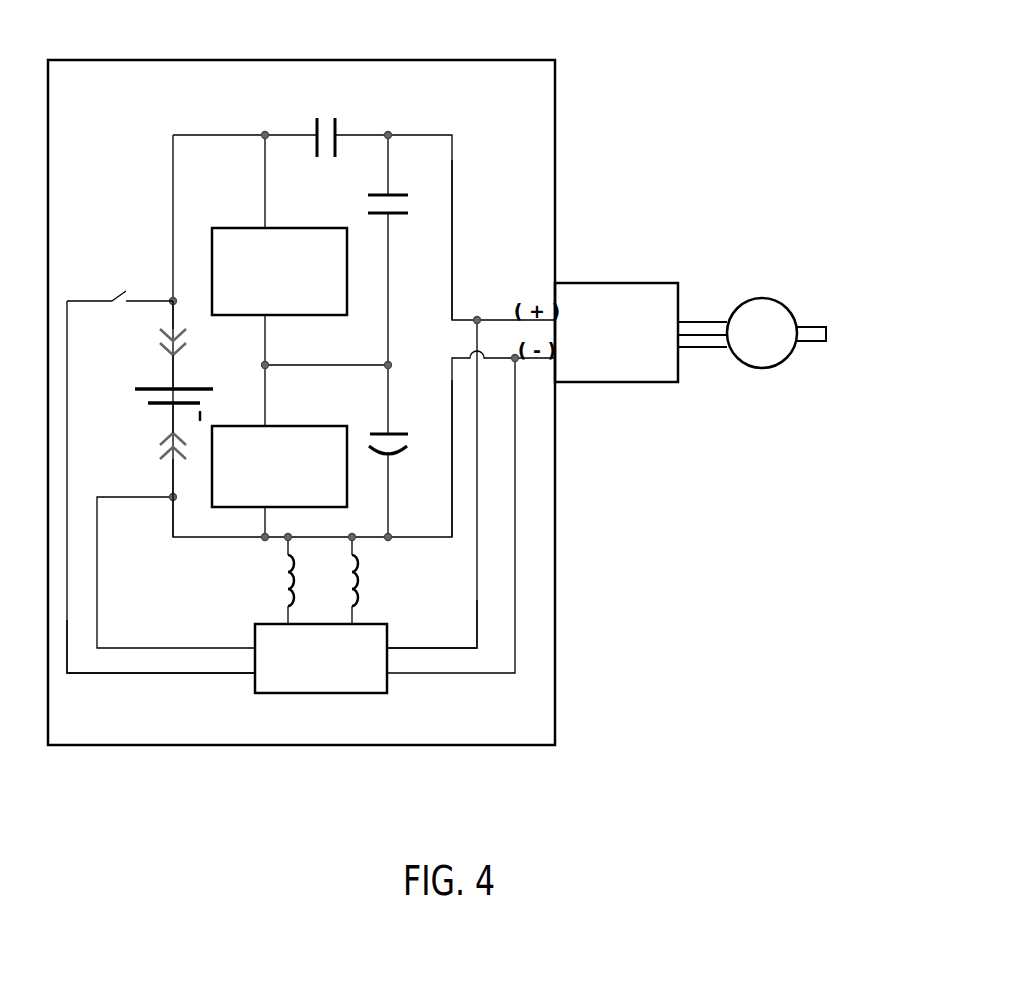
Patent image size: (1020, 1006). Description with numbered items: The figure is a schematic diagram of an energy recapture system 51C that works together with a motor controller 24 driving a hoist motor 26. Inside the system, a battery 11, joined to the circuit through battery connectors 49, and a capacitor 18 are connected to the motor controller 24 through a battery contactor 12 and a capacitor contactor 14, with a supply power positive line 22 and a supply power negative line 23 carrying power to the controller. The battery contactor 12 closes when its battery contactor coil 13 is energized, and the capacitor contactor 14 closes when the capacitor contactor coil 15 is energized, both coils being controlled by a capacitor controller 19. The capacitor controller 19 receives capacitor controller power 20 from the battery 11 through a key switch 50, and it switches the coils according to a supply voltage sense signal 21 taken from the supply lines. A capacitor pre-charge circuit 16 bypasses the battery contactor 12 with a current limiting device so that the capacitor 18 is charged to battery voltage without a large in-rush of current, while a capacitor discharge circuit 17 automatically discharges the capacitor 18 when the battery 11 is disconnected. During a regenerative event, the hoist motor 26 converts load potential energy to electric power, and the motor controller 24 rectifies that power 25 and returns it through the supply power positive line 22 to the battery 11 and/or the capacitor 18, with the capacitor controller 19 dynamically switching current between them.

The energy recapture system 51C is at (183, 58).
The battery 11 is at (161, 386).
The battery contactor 12 is at (320, 116).
The battery contactor coil 13 is at (281, 575).
The capacitor contactor 14 is at (367, 210).
The capacitor contactor coil 15 is at (365, 570).
The capacitor pre-charge circuit 16 is at (239, 227).
The capacitor discharge circuit 17 is at (300, 425).
The capacitor 18 is at (368, 437).
The capacitor controller 19 is at (320, 696).
The capacitor controller power 20 is at (188, 675).
The supply voltage sense signal 21 is at (444, 647).
The supply power positive line 22 is at (458, 246).
The supply power negative line 23 is at (452, 395).
The motor controller 24 is at (595, 383).
The power 25 is at (715, 314).
The hoist motor 26 is at (764, 297).
The battery connectors 49 is at (160, 334).
The key switch 50 is at (119, 297).